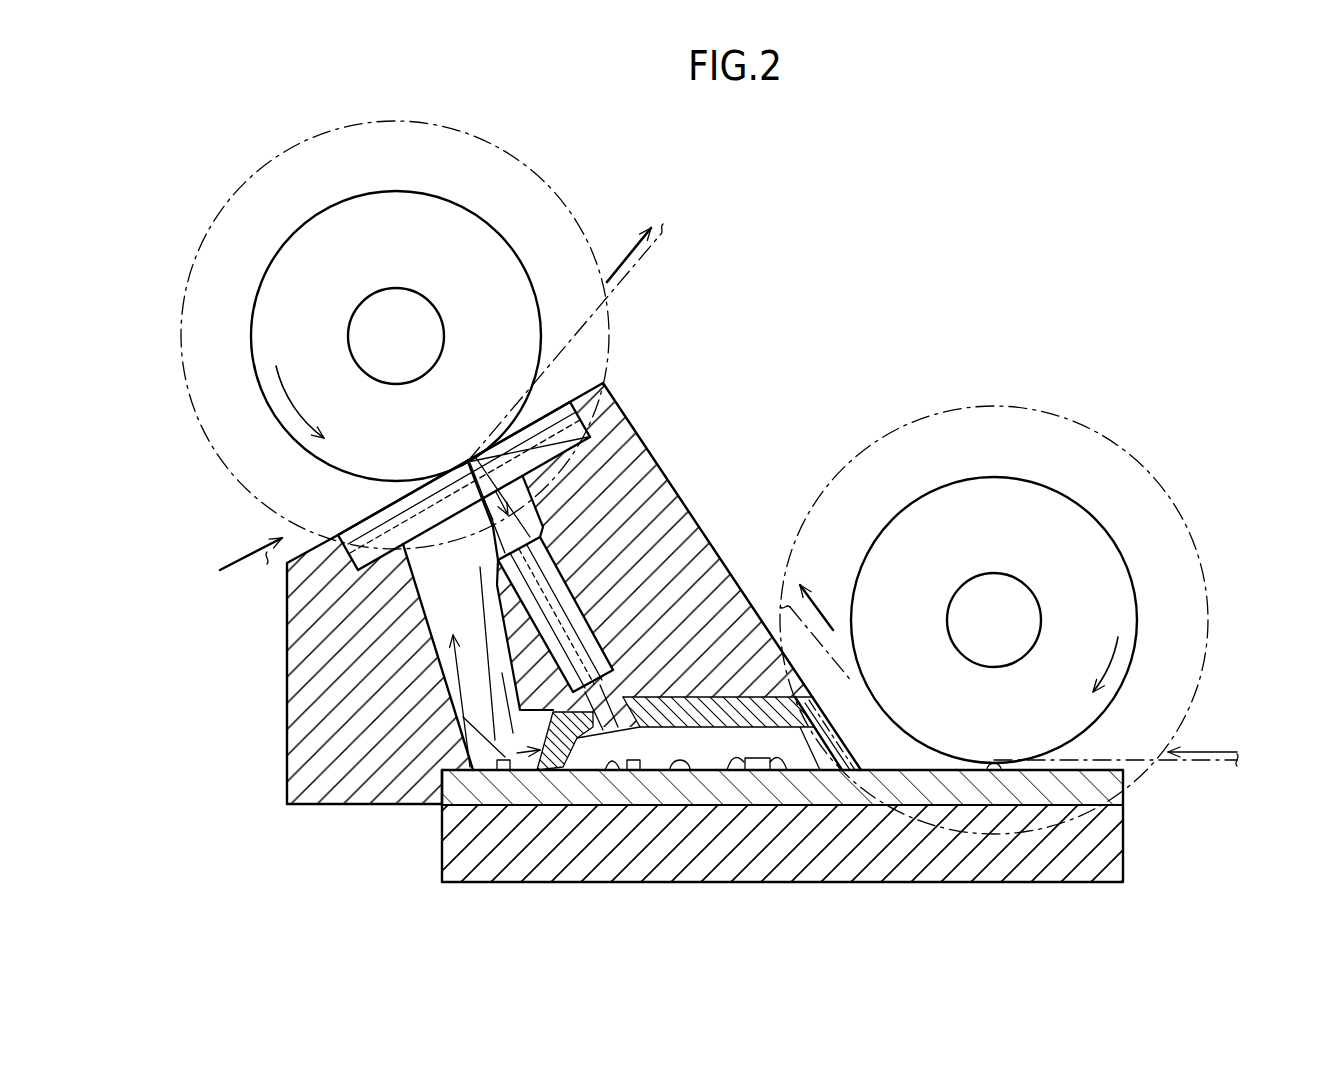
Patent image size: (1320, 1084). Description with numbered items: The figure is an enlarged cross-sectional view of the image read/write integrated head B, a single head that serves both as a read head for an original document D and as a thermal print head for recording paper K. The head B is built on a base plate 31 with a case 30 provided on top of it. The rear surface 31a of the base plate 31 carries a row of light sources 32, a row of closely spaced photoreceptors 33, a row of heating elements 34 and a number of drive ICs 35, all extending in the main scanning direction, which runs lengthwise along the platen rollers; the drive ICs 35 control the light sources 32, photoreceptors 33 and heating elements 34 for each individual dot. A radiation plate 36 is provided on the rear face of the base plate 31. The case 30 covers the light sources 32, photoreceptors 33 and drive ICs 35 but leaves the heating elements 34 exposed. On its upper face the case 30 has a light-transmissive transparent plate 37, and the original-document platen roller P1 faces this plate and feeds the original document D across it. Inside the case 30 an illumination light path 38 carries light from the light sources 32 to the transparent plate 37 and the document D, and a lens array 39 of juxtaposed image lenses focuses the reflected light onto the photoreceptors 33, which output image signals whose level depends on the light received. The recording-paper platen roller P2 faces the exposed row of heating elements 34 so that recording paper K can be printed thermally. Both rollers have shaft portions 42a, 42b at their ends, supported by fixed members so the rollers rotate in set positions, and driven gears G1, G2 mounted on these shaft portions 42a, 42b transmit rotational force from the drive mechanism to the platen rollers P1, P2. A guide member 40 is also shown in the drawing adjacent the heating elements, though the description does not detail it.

The driven gear G1 is at (500, 152).
The original-document platen roller P1 is at (497, 243).
The shaft portion 42a is at (427, 323).
The original document D is at (612, 345).
The image read/write integrated head B is at (656, 445).
The case 30 is at (670, 507).
The transparent plate 37 is at (417, 500).
The illumination light path 38 is at (471, 657).
The lens array 39 is at (573, 600).
The guide plate 40 is at (725, 712).
The base plate 31 is at (907, 770).
The rear surface 31a is at (690, 770).
The light sources 32 is at (503, 770).
The photoreceptors 33 is at (633, 770).
The heating elements 34 is at (993, 772).
The drive ICs 35 is at (760, 770).
The radiation plate 36 is at (865, 850).
The driven gear G2 is at (1133, 478).
The recording-paper platen roller P2 is at (1123, 597).
The shaft portion 42b is at (1020, 617).
The recording paper K is at (1180, 767).